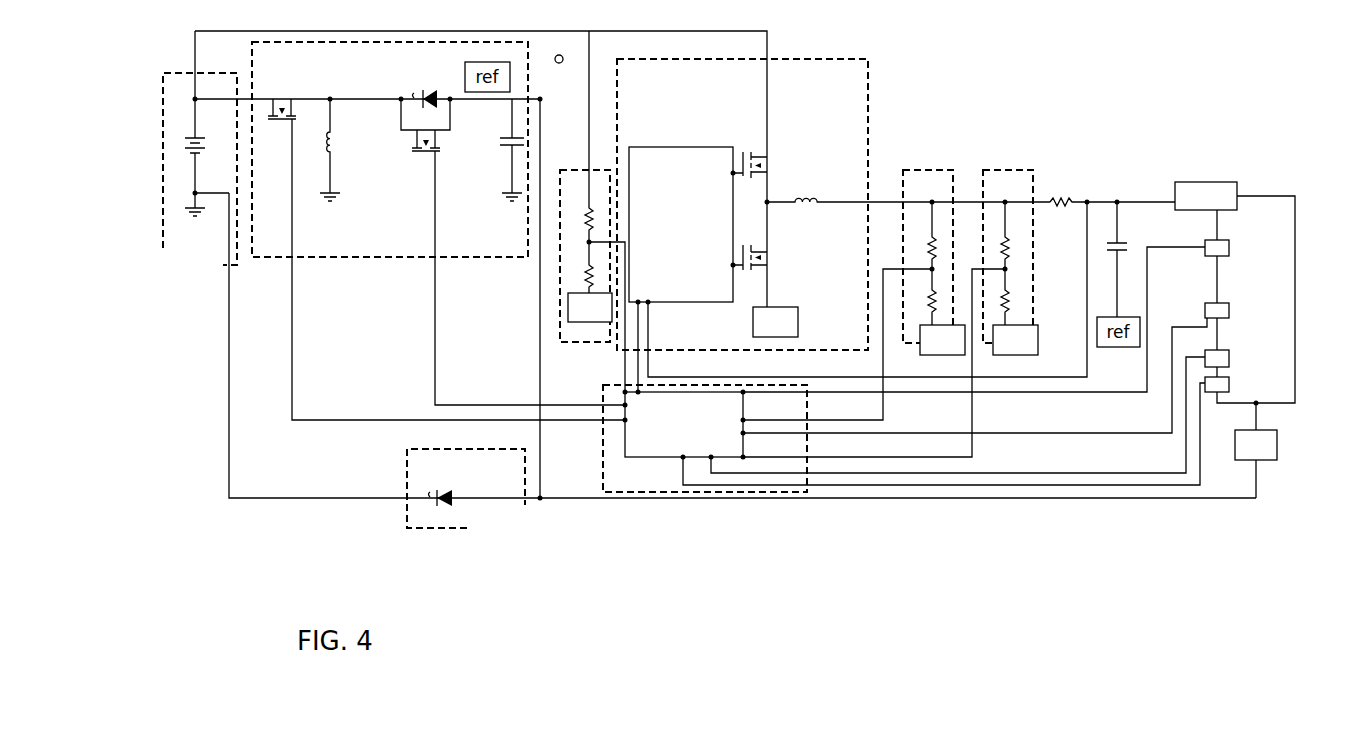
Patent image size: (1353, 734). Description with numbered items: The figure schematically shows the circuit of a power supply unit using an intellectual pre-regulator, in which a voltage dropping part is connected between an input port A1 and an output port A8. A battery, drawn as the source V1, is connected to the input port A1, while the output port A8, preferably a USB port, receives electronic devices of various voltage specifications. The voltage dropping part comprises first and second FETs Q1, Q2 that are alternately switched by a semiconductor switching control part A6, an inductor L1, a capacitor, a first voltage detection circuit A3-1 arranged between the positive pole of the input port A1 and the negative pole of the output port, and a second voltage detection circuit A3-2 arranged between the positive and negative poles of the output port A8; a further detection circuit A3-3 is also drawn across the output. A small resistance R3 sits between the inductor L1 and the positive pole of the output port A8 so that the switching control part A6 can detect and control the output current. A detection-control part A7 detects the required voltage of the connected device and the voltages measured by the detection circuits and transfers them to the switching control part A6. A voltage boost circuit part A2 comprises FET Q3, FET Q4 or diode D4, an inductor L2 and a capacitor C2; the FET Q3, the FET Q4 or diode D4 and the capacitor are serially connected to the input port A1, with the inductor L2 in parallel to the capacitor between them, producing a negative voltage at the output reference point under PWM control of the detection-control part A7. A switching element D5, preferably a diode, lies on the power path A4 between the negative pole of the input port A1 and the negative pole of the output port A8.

The input port A1 is at (197, 199).
The battery 12V V1 is at (210, 157).
The voltage boost circuit part A2 is at (438, 231).
The first FET Q3 is at (441, 237).
The inductor L2 is at (351, 149).
The diode D4 is at (426, 92).
The second FET Q4 is at (498, 267).
The capacitor C2 47u C2 is at (504, 150).
The first voltage detection circuit A3-1 is at (559, 211).
The semiconductor switching control part A6 is at (852, 225).
The first FET Q1 is at (777, 141).
The second FET Q2 is at (777, 269).
The inductor L1 is at (908, 182).
The voltage detection A3-3 is at (854, 276).
The second voltage detection circuit A3-2 is at (890, 294).
The resistance R3 is at (1109, 163).
The detection-control part A7 is at (905, 369).
The output port A8 is at (1235, 340).
The switching element D5 is at (466, 488).
The power path A4 is at (525, 525).